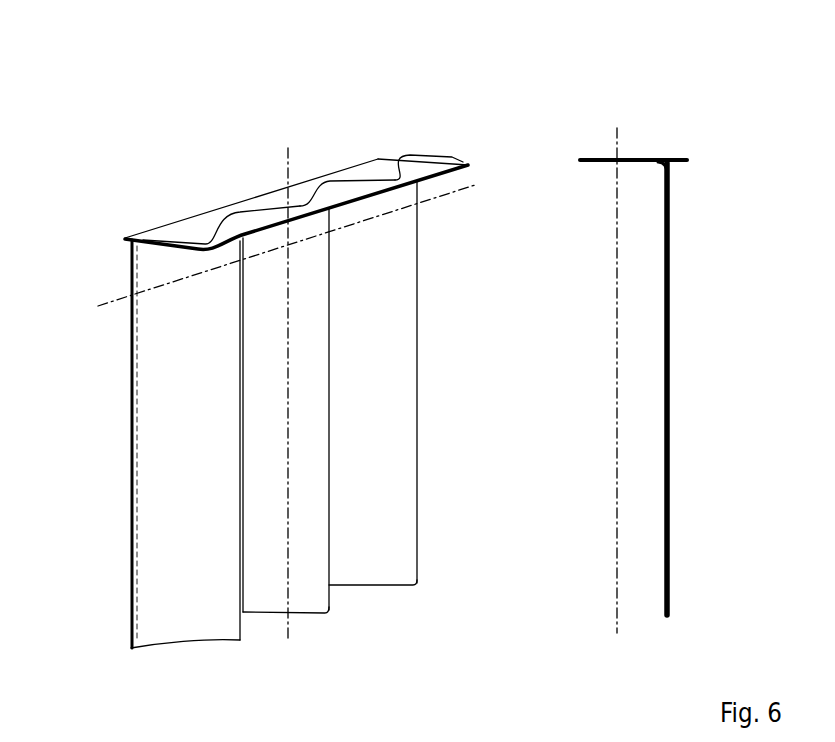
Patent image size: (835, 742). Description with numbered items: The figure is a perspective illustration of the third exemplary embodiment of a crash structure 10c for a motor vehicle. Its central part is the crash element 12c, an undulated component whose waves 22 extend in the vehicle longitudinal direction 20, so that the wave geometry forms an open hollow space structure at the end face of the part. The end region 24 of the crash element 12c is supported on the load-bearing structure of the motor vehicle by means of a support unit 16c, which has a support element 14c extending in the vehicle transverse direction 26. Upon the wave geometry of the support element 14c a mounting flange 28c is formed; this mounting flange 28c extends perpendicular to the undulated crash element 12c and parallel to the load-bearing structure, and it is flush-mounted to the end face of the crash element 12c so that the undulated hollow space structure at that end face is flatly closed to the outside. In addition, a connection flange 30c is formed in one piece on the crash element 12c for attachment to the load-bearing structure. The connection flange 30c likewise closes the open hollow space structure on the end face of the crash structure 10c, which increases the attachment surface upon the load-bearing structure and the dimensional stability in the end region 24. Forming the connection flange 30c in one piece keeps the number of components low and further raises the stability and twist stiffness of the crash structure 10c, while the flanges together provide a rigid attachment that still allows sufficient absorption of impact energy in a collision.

The crash structure 10c is at (195, 128).
The crash element 12c is at (165, 390).
The support element 14c is at (194, 230).
The support unit 16c is at (158, 212).
The vehicle longitudinal direction 20 is at (286, 148).
The waves 22 is at (318, 602).
The end region 24 is at (118, 310).
The vehicle transverse direction 26 is at (108, 298).
The mounting flange 28c is at (353, 180).
The connection flange 30c is at (421, 175).